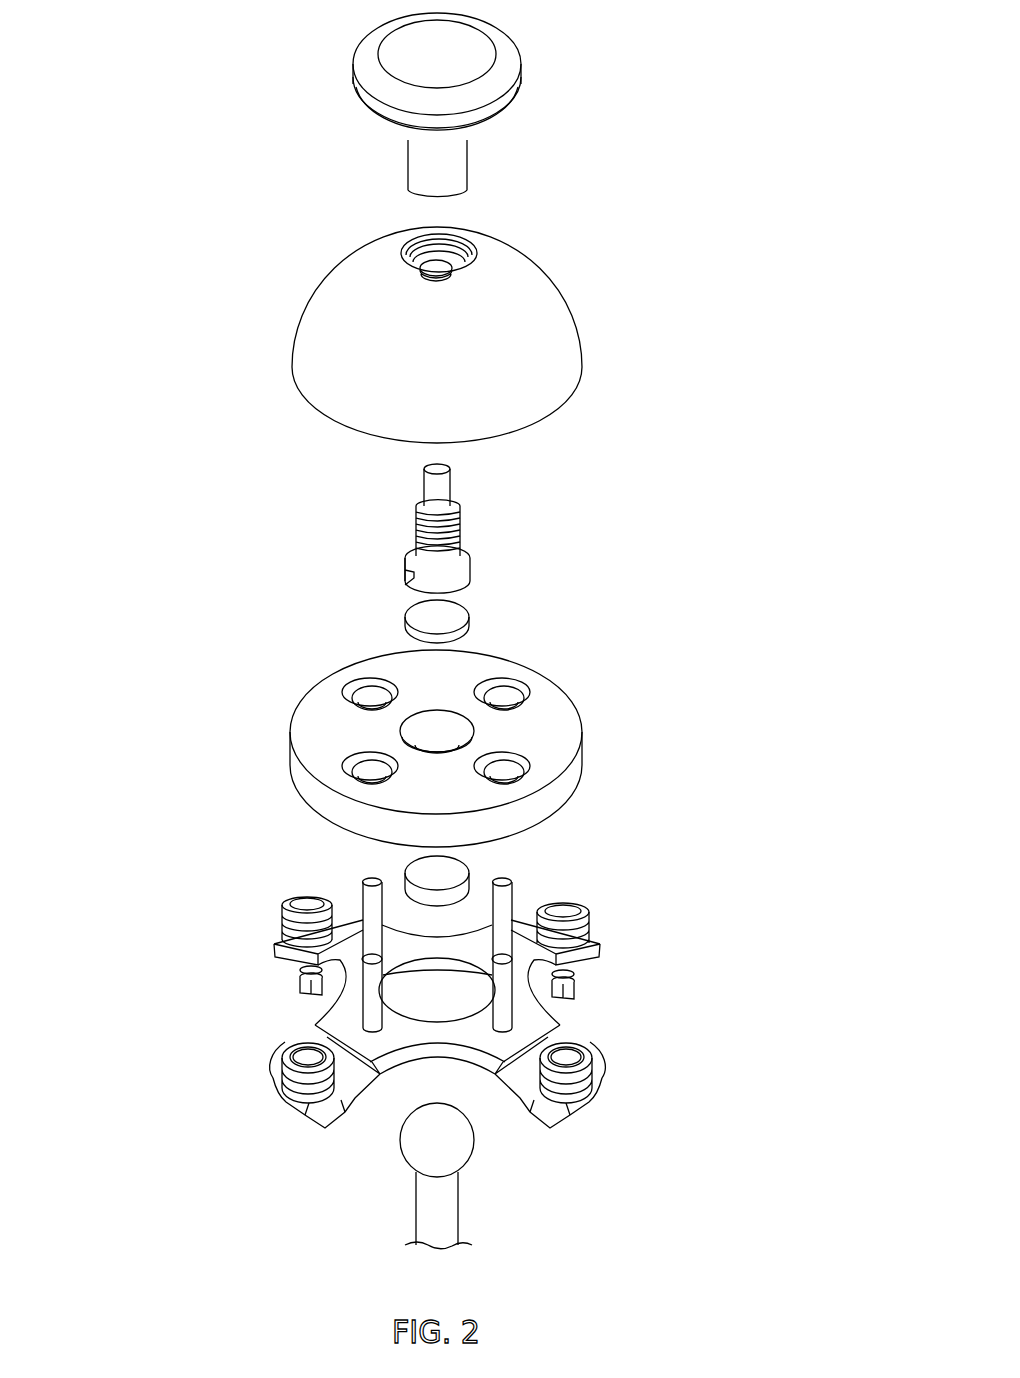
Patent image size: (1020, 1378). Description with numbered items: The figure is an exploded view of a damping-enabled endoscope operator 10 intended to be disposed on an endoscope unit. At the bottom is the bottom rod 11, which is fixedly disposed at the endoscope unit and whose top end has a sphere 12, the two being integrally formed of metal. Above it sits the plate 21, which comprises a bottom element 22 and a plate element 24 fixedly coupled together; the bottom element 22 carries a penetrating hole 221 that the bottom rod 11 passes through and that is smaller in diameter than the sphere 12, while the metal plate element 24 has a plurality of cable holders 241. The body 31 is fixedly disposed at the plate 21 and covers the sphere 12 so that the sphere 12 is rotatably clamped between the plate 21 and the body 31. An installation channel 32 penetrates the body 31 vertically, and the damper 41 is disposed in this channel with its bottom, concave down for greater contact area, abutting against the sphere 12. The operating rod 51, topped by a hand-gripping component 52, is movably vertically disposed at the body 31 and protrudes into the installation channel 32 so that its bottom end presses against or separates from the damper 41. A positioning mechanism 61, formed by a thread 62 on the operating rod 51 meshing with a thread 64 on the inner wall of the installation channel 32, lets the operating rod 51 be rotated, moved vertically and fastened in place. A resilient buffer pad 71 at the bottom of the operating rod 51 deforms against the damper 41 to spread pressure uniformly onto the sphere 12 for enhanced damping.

The damping-enabled endoscope operator 10 is at (748, 295).
The bottom rod 11 is at (458, 1222).
The sphere 12 is at (472, 1153).
The plate 21 is at (533, 697).
The bottom element 22 is at (572, 797).
The penetrating hole 221 is at (447, 722).
The plate element 24 is at (575, 1012).
The cable holders 241 is at (583, 922).
The body 31 is at (562, 295).
The installation channel 32 is at (448, 257).
The damper 41 is at (403, 873).
The operating rod 51 is at (396, 515).
The hand-gripping component 52 is at (515, 47).
The positioning mechanism 61 is at (170, 193).
The thread 62 is at (415, 539).
The thread 64 is at (422, 258).
The buffer pad 71 is at (405, 622).